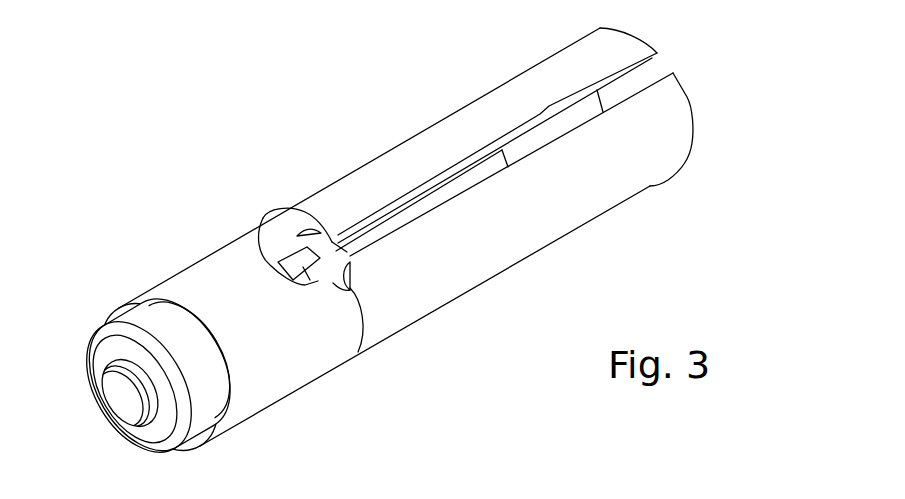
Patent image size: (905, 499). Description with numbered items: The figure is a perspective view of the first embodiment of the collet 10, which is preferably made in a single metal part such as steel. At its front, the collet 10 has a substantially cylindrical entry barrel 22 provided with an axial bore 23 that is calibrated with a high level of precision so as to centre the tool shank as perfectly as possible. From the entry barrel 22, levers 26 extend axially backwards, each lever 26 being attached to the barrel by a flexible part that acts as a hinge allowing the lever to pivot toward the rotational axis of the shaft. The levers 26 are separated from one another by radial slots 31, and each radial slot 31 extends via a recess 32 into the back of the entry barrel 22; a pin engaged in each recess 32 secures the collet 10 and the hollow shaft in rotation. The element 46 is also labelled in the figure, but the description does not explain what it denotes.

The collet 10 is at (380, 243).
The entry barrel 22 is at (273, 357).
The axial bore 23 is at (140, 383).
The lever 26 is at (427, 138).
The radial slot 31 is at (627, 84).
The recess 32 is at (297, 276).
The cover strip 46 is at (607, 46).